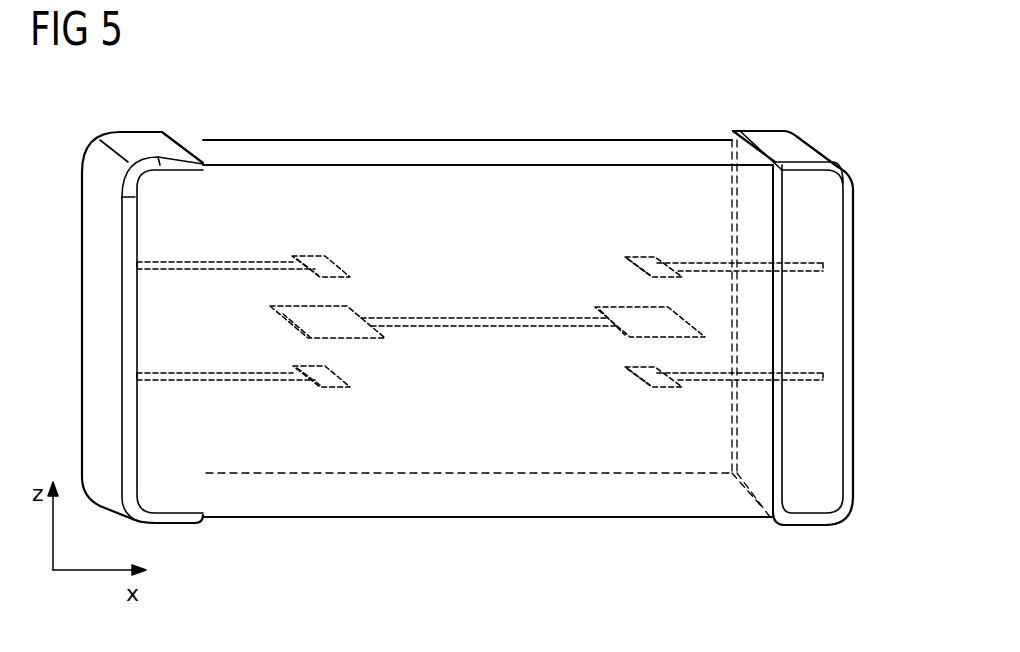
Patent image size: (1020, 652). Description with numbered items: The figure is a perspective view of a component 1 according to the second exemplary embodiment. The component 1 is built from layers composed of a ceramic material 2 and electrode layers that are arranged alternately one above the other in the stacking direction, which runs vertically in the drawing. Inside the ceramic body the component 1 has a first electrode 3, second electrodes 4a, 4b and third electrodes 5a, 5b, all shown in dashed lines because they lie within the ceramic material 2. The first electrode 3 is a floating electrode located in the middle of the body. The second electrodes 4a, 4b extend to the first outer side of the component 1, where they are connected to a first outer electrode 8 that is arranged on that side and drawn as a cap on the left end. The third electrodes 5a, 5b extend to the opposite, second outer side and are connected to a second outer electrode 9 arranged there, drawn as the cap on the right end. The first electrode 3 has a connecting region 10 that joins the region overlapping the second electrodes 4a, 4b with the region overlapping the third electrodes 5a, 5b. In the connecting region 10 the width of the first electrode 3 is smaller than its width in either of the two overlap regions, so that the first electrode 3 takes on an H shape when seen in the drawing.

The component 1 is at (705, 89).
The ceramic material 2 is at (443, 178).
The first electrode 3 is at (293, 317).
The second electrode 4a is at (328, 382).
The second electrode 4b is at (317, 257).
The third electrode 5a is at (660, 380).
The third electrode 5b is at (647, 257).
The first outer electrode 8 is at (93, 373).
The second outer electrode 9 is at (838, 363).
The connecting region 10 is at (468, 317).